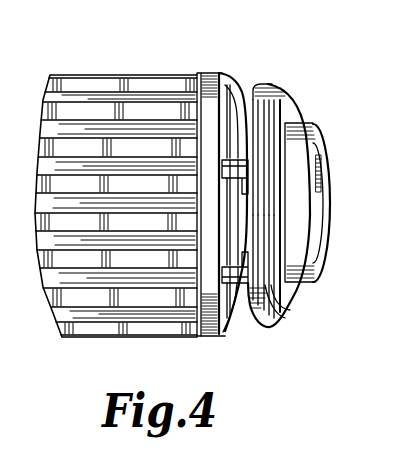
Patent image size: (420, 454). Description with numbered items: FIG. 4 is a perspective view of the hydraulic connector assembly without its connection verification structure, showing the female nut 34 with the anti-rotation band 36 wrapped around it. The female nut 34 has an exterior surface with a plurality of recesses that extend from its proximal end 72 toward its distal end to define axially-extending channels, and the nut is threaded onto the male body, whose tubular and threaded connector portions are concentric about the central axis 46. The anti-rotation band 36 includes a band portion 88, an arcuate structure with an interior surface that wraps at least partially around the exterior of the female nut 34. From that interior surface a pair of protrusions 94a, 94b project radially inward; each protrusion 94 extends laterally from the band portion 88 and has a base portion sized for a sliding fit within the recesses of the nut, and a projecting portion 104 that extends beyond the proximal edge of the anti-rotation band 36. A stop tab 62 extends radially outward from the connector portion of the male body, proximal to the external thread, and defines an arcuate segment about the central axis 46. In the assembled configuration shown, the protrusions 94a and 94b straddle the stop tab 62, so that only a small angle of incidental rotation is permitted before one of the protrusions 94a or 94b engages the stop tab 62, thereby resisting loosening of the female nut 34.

The female nut 34 is at (133, 66).
The anti-rotation band 36 is at (212, 63).
The proximal end 72 is at (240, 85).
The protrusion 94 is at (325, 207).
The first protrusion 94a is at (257, 88).
The second protrusion 94b is at (243, 290).
The projecting portion 104 is at (247, 176).
The stop tab 62 is at (245, 222).
The central axis 46 is at (317, 203).
The band portion 88 is at (217, 338).